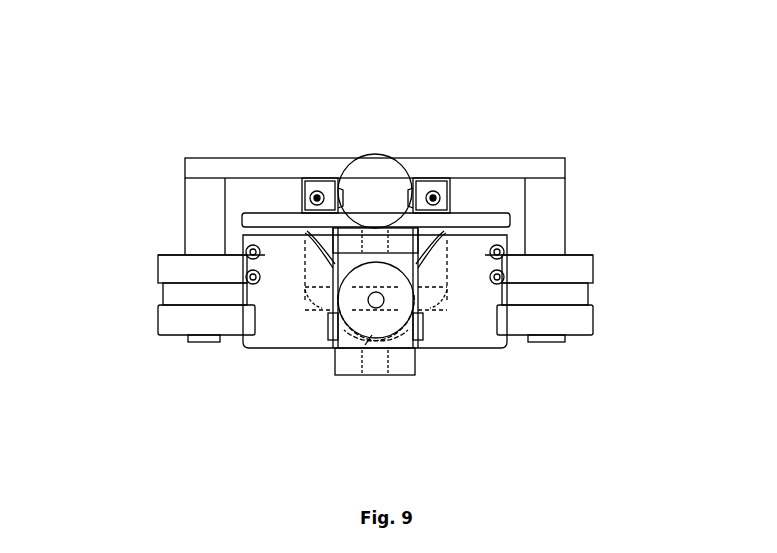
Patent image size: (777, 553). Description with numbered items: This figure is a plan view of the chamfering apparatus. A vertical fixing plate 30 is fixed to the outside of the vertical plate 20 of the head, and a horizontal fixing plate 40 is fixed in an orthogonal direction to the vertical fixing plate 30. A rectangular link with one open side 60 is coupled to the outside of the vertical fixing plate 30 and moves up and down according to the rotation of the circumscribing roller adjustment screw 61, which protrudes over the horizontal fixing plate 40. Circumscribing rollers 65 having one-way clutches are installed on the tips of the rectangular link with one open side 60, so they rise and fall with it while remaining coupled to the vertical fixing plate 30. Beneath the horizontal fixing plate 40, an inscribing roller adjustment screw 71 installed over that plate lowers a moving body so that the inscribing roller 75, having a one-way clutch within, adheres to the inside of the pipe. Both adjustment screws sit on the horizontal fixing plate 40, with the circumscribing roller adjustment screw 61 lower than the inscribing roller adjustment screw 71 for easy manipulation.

The vertical plate 20 is at (278, 214).
The vertical fixing plate 30 is at (313, 182).
The horizontal fixing plate 40 is at (308, 330).
The rectangular link with one open side 60 is at (507, 172).
The circumscribing roller adjustment screw 61 is at (373, 188).
The circumscribing rollers 65 is at (175, 272).
The inscribing roller adjustment screw 71 is at (367, 327).
The inscribing roller 75 is at (417, 363).